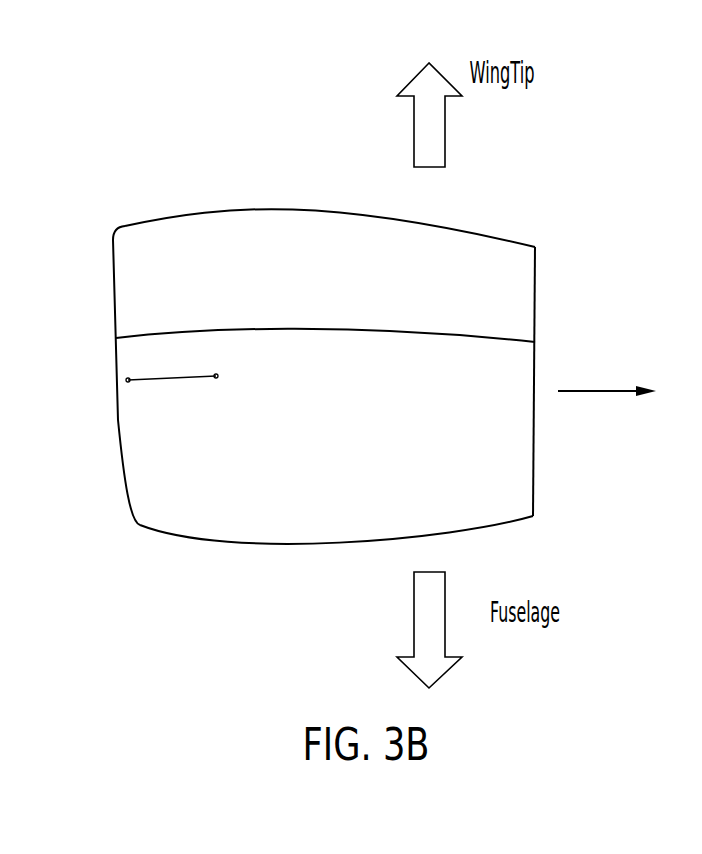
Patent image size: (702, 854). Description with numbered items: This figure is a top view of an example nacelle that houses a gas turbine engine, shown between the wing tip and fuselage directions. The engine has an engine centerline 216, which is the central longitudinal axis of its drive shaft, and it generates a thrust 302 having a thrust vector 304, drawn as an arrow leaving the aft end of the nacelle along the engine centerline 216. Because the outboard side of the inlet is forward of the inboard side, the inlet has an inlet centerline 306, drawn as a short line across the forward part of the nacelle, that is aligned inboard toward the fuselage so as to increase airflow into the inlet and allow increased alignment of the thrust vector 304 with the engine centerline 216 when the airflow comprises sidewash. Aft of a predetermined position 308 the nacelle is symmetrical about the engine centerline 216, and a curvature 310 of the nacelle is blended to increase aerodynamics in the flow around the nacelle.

The thrust 302 is at (619, 425).
The thrust vector 304 is at (619, 425).
The engine centerline 216 is at (592, 393).
The inlet centerline 306 is at (177, 378).
The predetermined position 308 is at (302, 185).
The curvature 310 is at (219, 185).